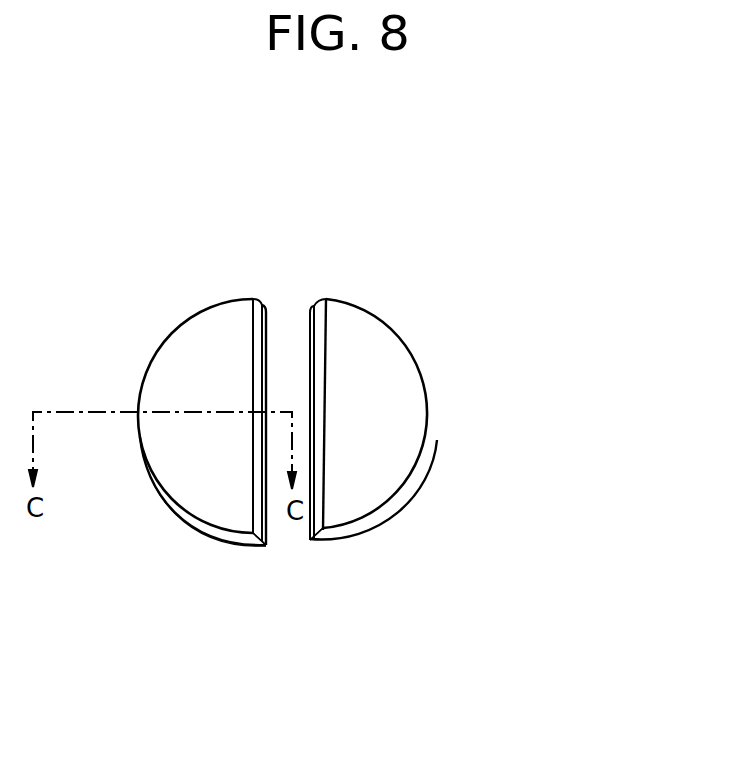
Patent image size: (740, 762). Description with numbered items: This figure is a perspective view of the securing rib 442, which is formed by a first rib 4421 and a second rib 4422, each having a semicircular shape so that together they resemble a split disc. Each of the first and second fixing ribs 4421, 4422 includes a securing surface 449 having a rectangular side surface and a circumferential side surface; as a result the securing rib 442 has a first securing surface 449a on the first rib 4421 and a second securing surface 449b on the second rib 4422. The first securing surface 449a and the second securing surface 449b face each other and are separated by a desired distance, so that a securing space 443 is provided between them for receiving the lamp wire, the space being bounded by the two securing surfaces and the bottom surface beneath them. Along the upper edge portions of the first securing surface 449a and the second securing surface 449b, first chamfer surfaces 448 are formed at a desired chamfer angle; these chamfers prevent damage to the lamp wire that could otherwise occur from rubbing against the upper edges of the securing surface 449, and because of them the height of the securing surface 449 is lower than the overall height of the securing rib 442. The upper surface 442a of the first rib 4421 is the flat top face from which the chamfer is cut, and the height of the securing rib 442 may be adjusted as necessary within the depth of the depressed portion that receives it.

The securing rib 442 is at (440, 190).
The first rib 4421 is at (165, 312).
The second rib 4422 is at (388, 305).
The upper surface 442a is at (178, 487).
The securing space 443 is at (294, 380).
The first chamfer surface 448 is at (260, 543).
The securing surface 449 is at (383, 650).
The first securing surface 449a is at (265, 546).
The second securing surface 449b is at (312, 543).